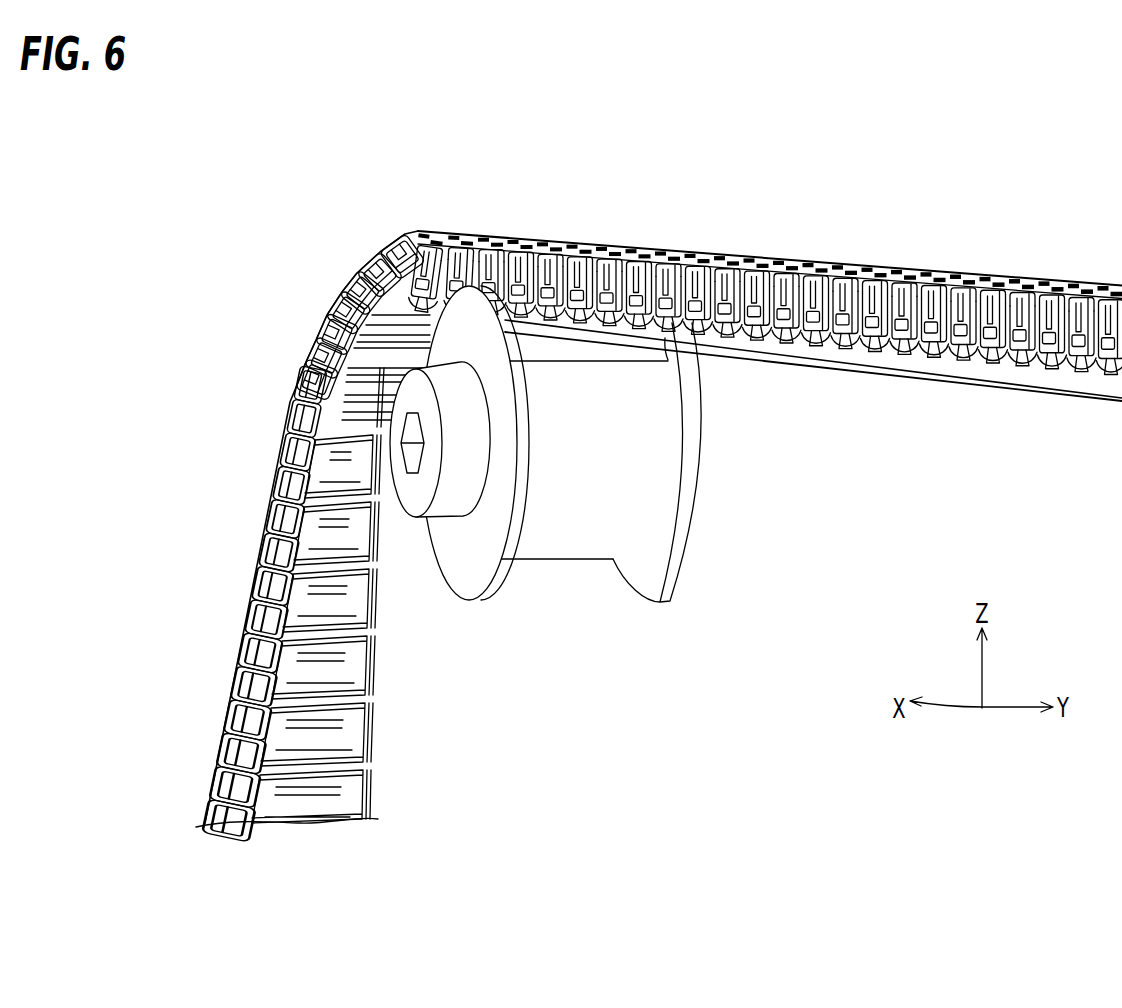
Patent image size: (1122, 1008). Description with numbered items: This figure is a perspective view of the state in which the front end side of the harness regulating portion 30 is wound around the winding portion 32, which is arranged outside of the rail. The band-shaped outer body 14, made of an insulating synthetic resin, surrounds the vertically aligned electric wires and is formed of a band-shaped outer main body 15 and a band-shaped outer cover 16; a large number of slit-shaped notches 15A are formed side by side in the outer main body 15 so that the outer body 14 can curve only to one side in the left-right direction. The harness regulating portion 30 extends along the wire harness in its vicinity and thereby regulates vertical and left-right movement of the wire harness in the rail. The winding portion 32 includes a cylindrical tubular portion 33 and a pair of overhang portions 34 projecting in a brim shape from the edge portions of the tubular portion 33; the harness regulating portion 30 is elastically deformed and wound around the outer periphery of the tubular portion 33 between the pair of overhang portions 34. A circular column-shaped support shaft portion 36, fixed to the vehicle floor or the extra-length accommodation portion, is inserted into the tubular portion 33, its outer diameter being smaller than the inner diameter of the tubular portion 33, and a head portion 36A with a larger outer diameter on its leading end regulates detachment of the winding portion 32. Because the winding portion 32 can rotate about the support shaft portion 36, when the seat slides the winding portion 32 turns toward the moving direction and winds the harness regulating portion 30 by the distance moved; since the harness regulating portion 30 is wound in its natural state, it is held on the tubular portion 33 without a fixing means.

The outer body 14 is at (659, 499).
The outer main body 15 is at (967, 350).
The notches 15A is at (343, 568).
The outer cover 16 is at (1043, 343).
The harness regulating portion 30 is at (847, 362).
The winding portion 32 is at (605, 223).
The tubular portion 33 is at (568, 347).
The overhang portions 34 is at (509, 272).
The support shaft portion 36 is at (545, 490).
The head portion 36A is at (418, 480).